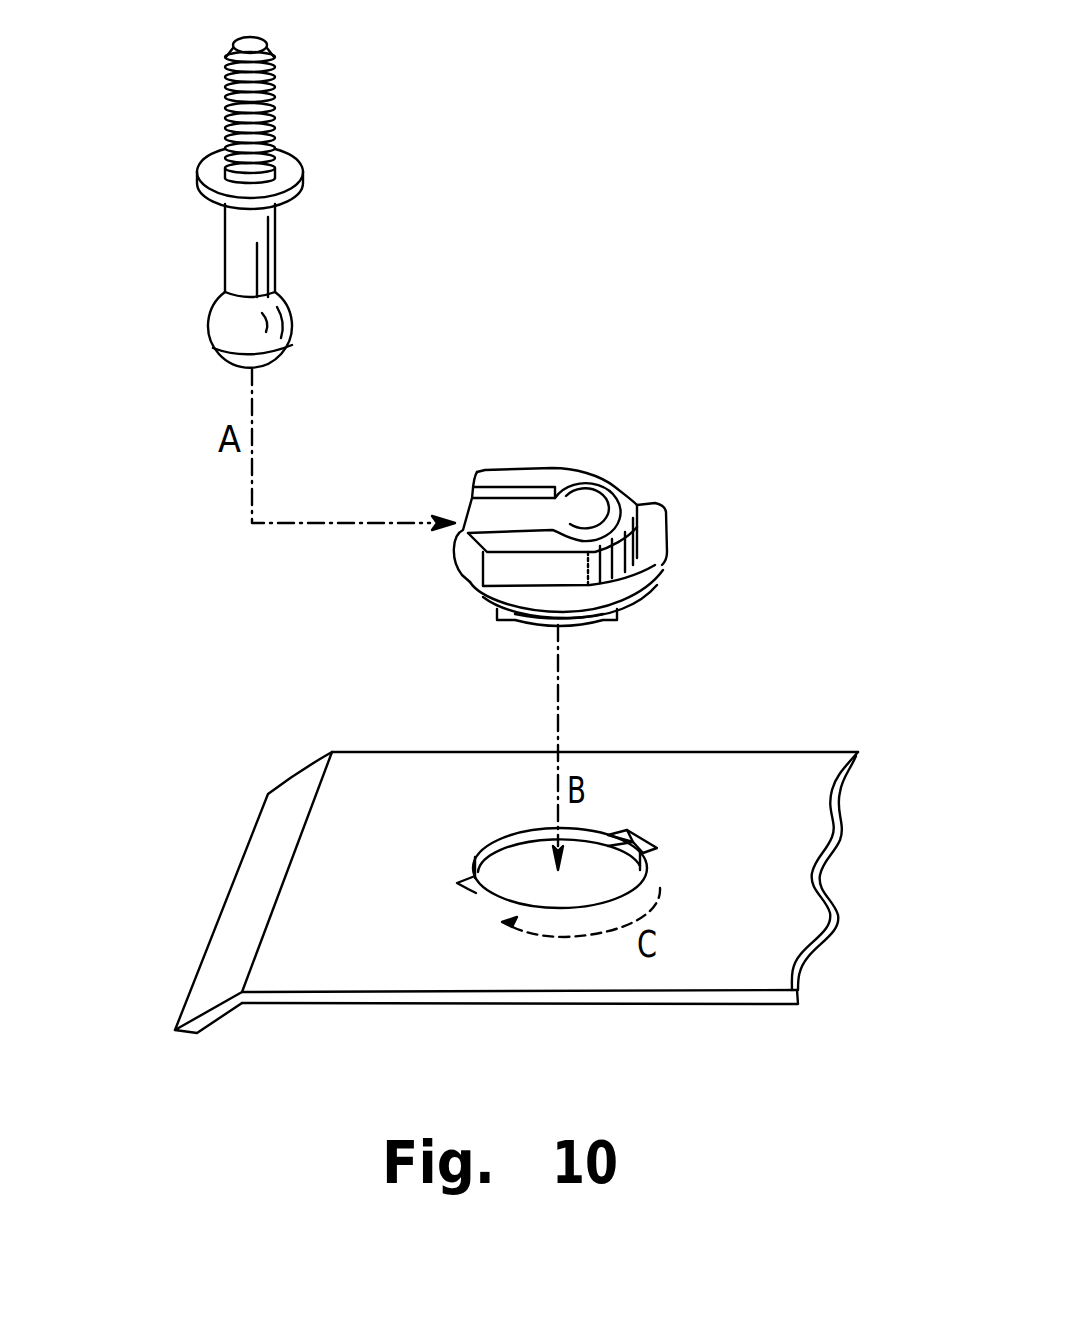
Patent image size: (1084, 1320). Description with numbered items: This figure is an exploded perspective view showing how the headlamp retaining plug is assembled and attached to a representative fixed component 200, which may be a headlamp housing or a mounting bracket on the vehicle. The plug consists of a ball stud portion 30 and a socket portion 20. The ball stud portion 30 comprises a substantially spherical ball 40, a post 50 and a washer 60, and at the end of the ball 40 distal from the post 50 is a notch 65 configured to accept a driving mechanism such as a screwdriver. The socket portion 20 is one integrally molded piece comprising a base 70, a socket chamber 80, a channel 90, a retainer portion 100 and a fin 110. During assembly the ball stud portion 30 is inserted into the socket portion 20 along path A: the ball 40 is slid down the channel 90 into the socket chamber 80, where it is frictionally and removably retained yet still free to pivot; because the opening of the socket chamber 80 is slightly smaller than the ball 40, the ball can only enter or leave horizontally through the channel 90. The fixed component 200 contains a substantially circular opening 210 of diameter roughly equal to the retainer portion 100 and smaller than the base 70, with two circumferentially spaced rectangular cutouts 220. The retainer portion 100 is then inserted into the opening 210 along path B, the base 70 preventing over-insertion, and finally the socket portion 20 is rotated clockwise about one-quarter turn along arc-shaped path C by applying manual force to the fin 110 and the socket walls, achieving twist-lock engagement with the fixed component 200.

The socket portion 20 is at (643, 481).
The ball stud portion 30 is at (209, 105).
The ball 40 is at (290, 316).
The post 50 is at (274, 86).
The washer 60 is at (300, 180).
The notch 65 is at (212, 204).
The base 70 is at (645, 567).
The socket chamber 80 is at (585, 508).
The channel 90 is at (508, 505).
The retainer portion 100 is at (570, 625).
The fin 110 is at (667, 518).
The fixed component 200 is at (735, 765).
The opening 210 is at (476, 868).
The cutouts 220 is at (641, 838).